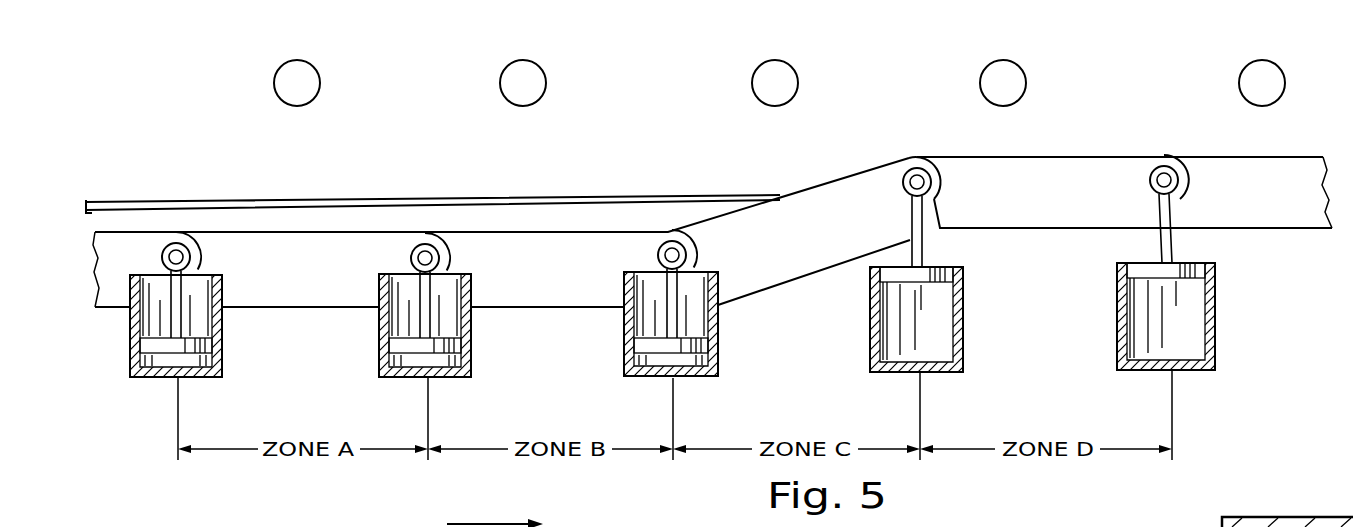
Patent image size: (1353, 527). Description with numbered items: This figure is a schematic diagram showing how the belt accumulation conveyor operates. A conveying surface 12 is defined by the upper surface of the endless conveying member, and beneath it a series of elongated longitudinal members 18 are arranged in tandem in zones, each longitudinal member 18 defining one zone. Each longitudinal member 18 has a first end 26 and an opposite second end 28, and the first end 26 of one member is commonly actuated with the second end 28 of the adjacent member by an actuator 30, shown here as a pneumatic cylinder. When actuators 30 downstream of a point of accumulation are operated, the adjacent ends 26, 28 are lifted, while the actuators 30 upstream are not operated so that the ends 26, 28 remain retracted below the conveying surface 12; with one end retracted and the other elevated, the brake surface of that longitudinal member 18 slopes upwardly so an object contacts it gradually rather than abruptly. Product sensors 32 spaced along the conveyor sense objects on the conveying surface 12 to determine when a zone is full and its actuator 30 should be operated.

The conveying surface 12 is at (557, 197).
The elongated longitudinal member 18 is at (280, 308).
The first end 26 is at (205, 231).
The second end 28 is at (410, 231).
The actuator 30 is at (223, 368).
The product sensor 32 is at (308, 63).